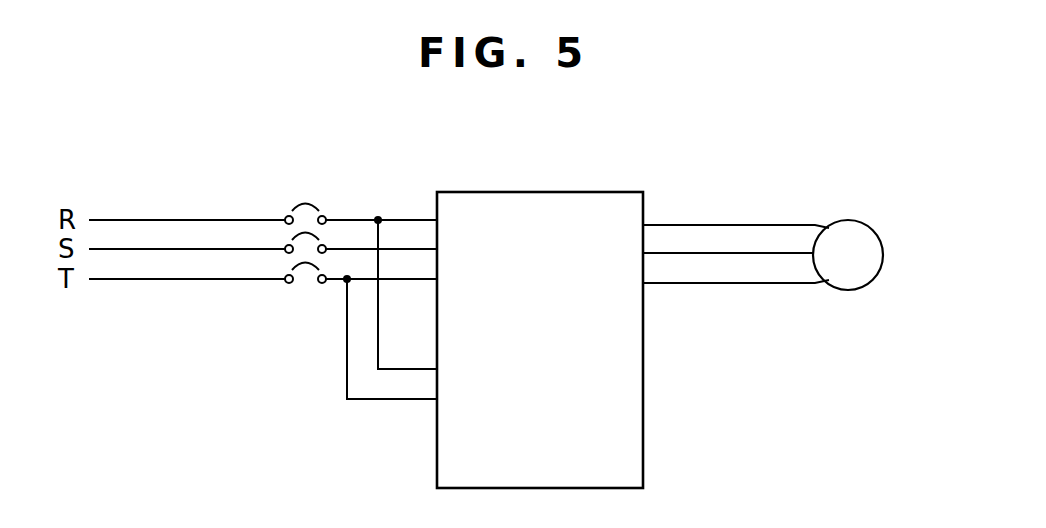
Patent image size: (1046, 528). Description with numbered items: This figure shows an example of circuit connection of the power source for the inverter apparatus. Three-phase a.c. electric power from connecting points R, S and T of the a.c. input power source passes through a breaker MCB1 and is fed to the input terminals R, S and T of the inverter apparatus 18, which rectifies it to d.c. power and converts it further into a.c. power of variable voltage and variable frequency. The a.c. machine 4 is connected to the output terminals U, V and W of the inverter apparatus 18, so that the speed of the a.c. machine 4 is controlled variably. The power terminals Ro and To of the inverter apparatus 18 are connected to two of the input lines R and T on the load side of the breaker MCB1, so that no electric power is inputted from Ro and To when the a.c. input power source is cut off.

The inverter apparatus 18 is at (591, 192).
The a.c. machine 4 is at (861, 221).
The molded case circuit breaker MCB1 is at (307, 225).